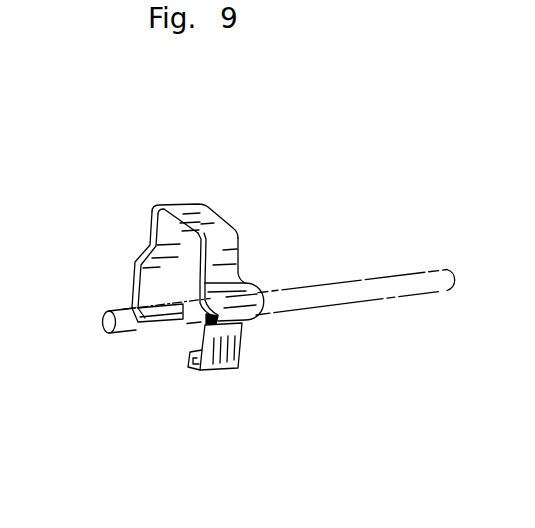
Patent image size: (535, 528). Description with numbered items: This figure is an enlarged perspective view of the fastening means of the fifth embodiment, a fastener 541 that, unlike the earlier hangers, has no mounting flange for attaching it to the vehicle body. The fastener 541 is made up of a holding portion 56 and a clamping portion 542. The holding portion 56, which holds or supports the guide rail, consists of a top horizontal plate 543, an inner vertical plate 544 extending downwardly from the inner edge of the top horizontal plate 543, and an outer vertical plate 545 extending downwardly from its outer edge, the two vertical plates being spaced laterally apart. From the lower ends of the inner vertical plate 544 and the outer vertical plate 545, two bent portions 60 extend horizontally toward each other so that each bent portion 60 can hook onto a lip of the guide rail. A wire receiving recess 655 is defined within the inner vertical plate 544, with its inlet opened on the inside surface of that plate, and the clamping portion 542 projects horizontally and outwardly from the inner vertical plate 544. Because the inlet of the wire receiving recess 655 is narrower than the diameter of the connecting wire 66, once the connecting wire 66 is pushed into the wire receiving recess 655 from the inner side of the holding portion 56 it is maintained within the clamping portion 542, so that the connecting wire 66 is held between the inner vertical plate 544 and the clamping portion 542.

The fastener 541 is at (250, 226).
The clamping portion 542 is at (245, 297).
The top horizontal plate 543 is at (203, 212).
The inner vertical plate 544 is at (240, 252).
The outer vertical plate 545 is at (142, 250).
The wire receiving recess 655 is at (208, 306).
The bent portion 60 is at (155, 328).
The holding portion 56 is at (231, 356).
The connecting wire 66 is at (440, 294).